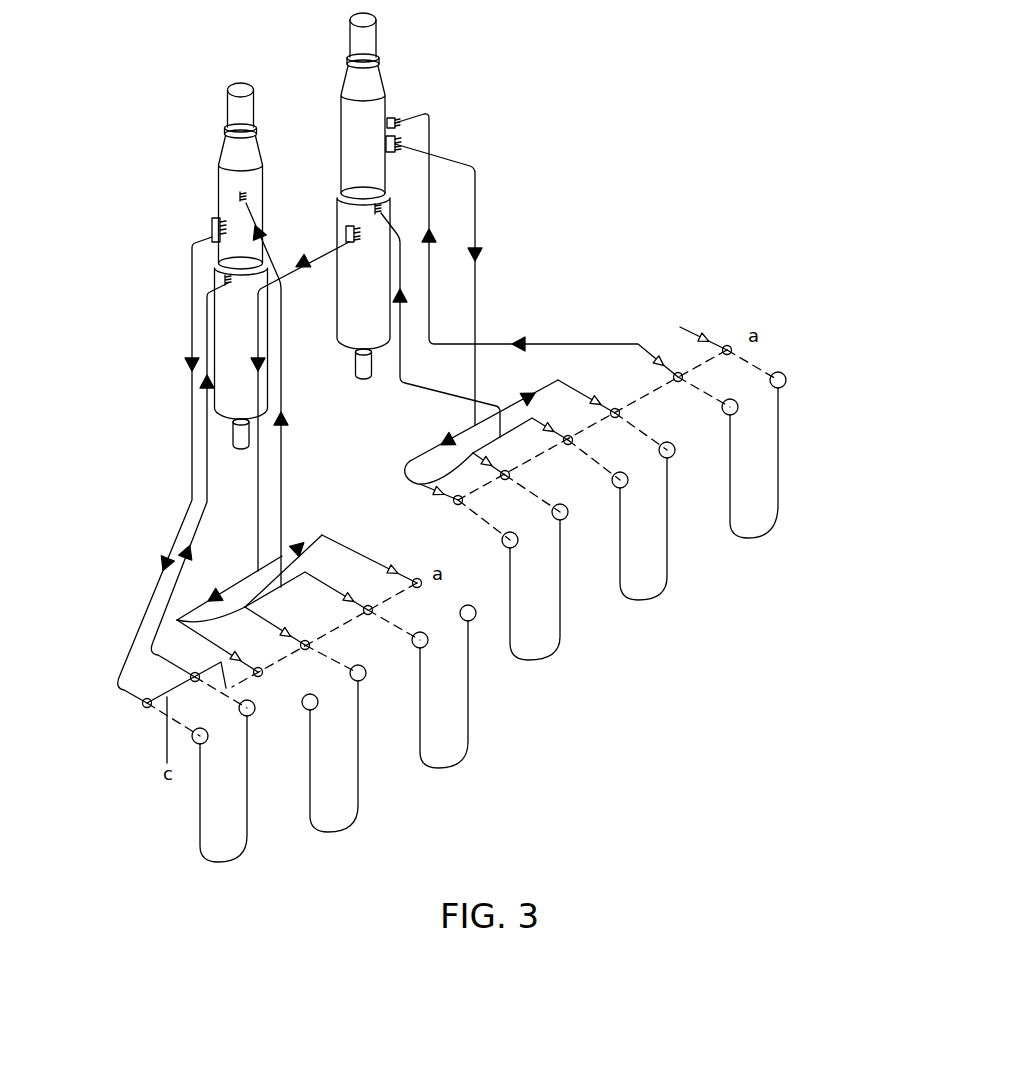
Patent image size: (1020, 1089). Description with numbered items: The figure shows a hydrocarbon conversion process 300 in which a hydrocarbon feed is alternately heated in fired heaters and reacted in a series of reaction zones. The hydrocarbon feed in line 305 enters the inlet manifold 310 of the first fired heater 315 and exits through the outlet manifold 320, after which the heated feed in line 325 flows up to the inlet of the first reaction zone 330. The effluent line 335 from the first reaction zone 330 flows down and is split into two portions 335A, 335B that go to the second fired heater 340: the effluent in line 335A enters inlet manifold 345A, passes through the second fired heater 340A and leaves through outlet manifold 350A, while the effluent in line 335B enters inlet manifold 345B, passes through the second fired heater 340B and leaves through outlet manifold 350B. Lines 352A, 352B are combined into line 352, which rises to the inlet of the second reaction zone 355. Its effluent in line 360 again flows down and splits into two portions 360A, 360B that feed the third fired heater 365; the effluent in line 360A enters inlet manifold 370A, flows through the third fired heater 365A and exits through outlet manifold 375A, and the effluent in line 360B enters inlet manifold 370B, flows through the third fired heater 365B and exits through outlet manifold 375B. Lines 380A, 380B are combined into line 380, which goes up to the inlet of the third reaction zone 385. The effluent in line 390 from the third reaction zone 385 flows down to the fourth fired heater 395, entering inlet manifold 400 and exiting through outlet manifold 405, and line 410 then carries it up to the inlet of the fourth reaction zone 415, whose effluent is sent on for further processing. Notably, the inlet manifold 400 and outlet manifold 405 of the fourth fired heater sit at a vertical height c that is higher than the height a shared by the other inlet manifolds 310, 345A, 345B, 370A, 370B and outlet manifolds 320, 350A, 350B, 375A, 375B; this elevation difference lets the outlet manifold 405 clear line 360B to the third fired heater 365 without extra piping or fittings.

The hydrocarbon conversion process 300 is at (756, 234).
The hydrocarbon feed line 305 is at (684, 324).
The inlet manifold 310 is at (757, 362).
The first fired heater 315 is at (782, 412).
The outlet manifold 320 is at (703, 390).
The heated hydrocarbon feed line 325 is at (646, 347).
The first reaction zone 330 is at (372, 80).
The effluent line 335 is at (413, 147).
The effluent line portion 335A is at (591, 393).
The effluent line portion 335B is at (416, 462).
The second fired heater 340 is at (598, 606).
The second fired heater section 340A is at (668, 552).
The second fired heater section 340B is at (560, 615).
The inlet manifold 345A is at (647, 422).
The inlet manifold 345B is at (484, 518).
The outlet manifold 350A is at (604, 462).
The outlet manifold 350B is at (533, 490).
The combined line 352 is at (447, 390).
The line 352A is at (562, 418).
The line 352B is at (424, 487).
The second reaction zone 355 is at (388, 204).
The effluent line 360 is at (318, 256).
The effluent line portion 360A is at (322, 535).
The effluent line portion 360B is at (230, 588).
The third fired heater 365 is at (395, 772).
The third fired heater section 365A is at (468, 722).
The third fired heater section 365B is at (358, 782).
The inlet manifold 370A is at (408, 568).
The inlet manifold 370B is at (222, 654).
The outlet manifold 375A is at (390, 622).
The outlet manifold 375B is at (333, 660).
The combined line 380 is at (283, 459).
The line 380A is at (343, 592).
The line 380B is at (177, 620).
The third reaction zone 385 is at (273, 176).
The effluent line 390 is at (209, 229).
The fourth fired heater 395 is at (247, 815).
The inlet manifold 400 is at (158, 712).
The outlet manifold 405 is at (212, 688).
The line 410 is at (163, 603).
The fourth reaction zone 415 is at (275, 358).